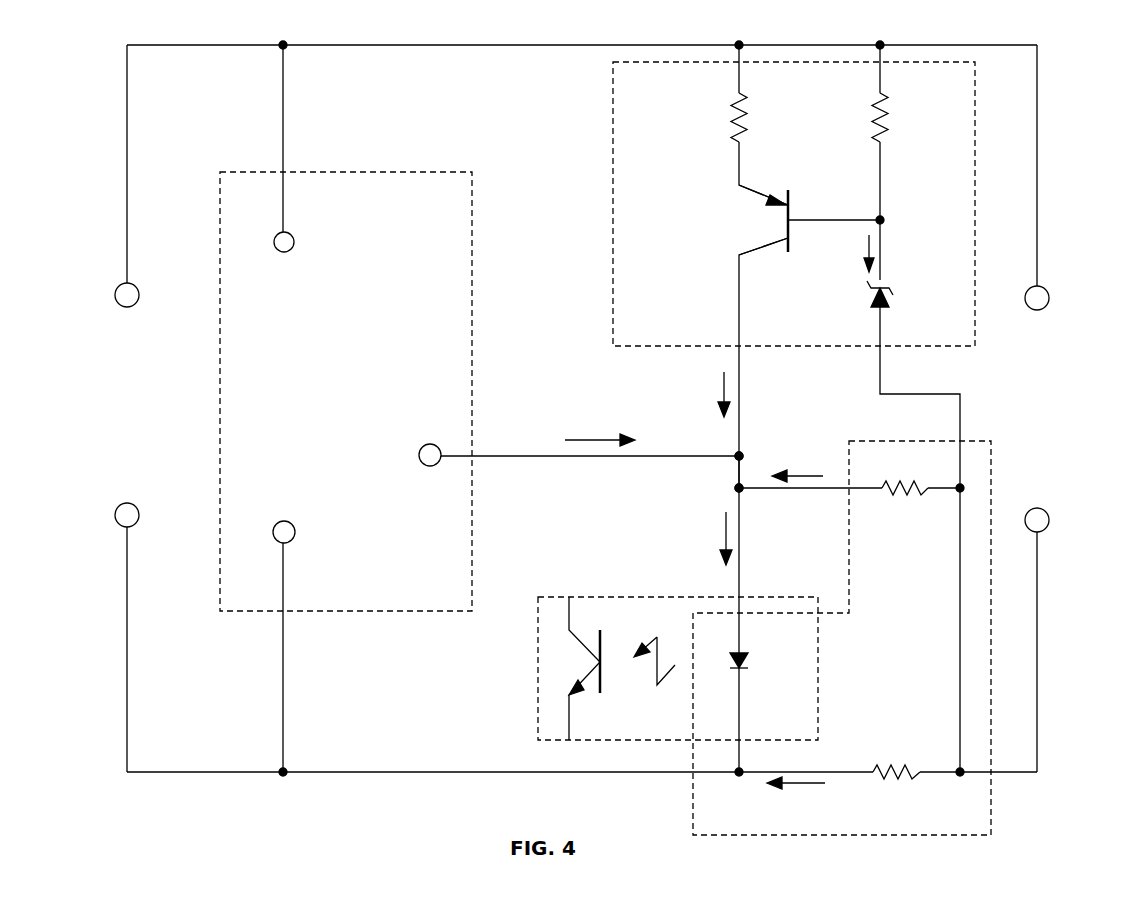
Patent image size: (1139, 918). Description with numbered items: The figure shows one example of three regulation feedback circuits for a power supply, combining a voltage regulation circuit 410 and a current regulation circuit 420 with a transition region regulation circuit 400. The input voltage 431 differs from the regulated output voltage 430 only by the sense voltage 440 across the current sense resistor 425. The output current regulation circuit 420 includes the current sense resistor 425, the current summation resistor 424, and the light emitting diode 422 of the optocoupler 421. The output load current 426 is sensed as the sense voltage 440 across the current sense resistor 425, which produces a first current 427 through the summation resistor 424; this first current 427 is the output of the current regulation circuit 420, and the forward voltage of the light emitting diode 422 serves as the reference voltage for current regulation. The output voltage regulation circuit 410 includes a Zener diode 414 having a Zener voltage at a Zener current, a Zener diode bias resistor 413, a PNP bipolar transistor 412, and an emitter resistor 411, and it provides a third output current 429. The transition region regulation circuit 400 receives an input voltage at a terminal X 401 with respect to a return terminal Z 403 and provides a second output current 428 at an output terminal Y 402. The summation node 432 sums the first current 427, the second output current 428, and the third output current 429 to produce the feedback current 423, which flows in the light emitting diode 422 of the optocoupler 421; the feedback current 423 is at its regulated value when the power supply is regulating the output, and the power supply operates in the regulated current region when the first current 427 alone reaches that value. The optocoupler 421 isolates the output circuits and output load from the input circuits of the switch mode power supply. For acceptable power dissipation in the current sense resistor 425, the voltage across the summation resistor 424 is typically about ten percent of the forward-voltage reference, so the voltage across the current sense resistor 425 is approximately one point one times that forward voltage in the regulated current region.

The transition region regulation circuit 400 is at (448, 157).
The terminal X 401 is at (300, 239).
The output terminal Y 402 is at (422, 434).
The return terminal Z 403 is at (298, 527).
The voltage regulation circuit 410 is at (608, 192).
The emitter resistor RE 411 is at (727, 110).
The PNP bipolar transistor 412 is at (770, 226).
The Zener diode bias resistor RBX 413 is at (868, 118).
The Zener diode 414 is at (866, 299).
The current regulation circuit 420 is at (848, 572).
The optocoupler 421 is at (601, 592).
The light emitting diode LED 422 is at (752, 660).
The feedback current IFB 423 is at (707, 547).
The current summation resistor RSUM 424 is at (910, 504).
The current sense resistor RS 425 is at (920, 791).
The output load current IOUT 426 is at (823, 792).
The current I1 427 is at (821, 460).
The output current I2 428 is at (581, 422).
The output current I3 429 is at (698, 398).
The regulated output voltage VO 430 is at (1058, 407).
The input voltage VIN 431 is at (150, 392).
The summation node 432 is at (735, 477).
The voltage VS 440 is at (907, 733).